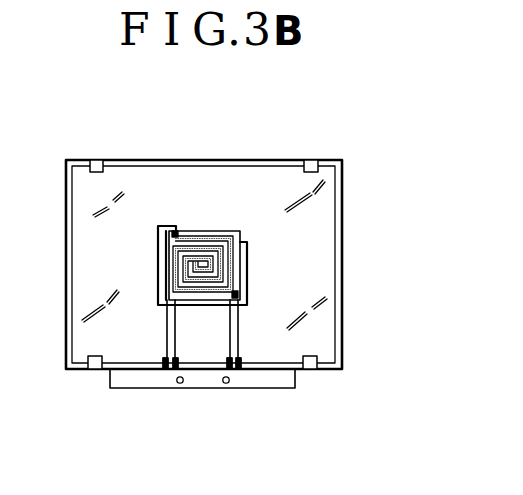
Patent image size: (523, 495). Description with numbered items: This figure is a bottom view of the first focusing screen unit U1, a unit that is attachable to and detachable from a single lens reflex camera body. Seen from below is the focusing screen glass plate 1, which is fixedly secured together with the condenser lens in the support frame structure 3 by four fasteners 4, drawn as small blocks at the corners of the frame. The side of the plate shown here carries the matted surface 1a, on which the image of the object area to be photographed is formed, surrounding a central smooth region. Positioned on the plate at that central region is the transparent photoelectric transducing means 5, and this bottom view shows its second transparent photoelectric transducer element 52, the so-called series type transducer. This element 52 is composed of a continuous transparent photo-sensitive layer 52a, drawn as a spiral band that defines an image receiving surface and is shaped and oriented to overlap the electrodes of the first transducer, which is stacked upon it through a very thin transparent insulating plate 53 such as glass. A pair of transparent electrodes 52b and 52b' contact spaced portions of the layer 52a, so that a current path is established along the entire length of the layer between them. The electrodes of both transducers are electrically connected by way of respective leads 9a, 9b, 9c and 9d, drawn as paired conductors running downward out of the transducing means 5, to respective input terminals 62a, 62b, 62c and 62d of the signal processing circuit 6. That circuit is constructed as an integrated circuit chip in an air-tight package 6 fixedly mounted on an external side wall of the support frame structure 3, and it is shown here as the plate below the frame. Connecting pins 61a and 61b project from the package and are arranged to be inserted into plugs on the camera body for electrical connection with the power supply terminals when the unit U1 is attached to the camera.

The first focusing screen unit U1 is at (29, 150).
The focusing screen glass plate 1 is at (323, 255).
The matted surface 1a is at (320, 232).
The support frame structure 3 is at (343, 182).
The fasteners 4 is at (96, 160).
The transparent photoelectric transducing means 5 is at (154, 255).
The signal processing circuit 6 is at (283, 383).
The lead 9a is at (238, 322).
The lead 9b is at (167, 323).
The lead 9c is at (238, 347).
The lead 9d is at (167, 347).
The second transparent photoelectric transducer element 52 is at (239, 230).
The transparent photo-sensitive layer 52a is at (206, 292).
The transparent electrode 52b is at (268, 278).
The transparent electrode 52b' is at (183, 205).
The transparent insulating plate 53 is at (205, 250).
The connecting pin 61a is at (226, 384).
The connecting pin 61b is at (180, 384).
The input terminal 62a is at (239, 370).
The input terminal 62b is at (174, 370).
The input terminal 62c is at (229, 370).
The input terminal 62d is at (162, 370).